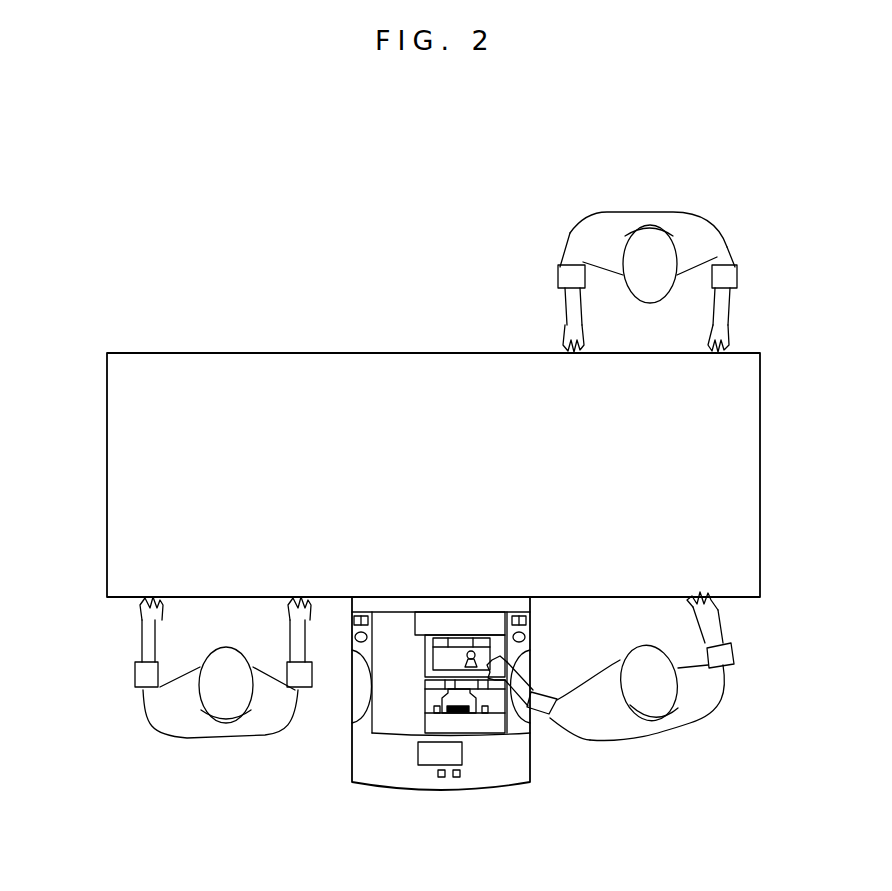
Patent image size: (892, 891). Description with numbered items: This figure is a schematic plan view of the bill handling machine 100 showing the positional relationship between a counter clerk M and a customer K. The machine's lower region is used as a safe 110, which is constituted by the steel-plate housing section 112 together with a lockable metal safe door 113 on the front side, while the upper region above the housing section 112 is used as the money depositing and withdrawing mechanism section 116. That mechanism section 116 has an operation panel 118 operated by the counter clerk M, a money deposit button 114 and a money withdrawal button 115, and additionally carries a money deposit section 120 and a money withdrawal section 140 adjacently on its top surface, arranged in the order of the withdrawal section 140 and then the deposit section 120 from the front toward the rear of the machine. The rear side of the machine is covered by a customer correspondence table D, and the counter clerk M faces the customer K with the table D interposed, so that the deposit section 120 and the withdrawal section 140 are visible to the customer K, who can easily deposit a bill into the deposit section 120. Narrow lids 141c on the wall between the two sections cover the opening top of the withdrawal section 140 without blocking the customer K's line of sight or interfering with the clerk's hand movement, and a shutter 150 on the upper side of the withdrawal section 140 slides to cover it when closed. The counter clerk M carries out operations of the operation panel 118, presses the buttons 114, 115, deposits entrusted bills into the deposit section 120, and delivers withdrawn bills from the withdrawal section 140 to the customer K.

The bill handling machine 100 is at (342, 834).
The safe 110 is at (420, 792).
The safe door 113 is at (441, 741).
The housing section 112 is at (375, 375).
The money deposit button 114 is at (443, 778).
The money withdrawal button 115 is at (460, 778).
The money depositing and withdrawing mechanism section 116 is at (370, 731).
The operation panel 118 is at (462, 758).
The money deposit section 120 is at (458, 636).
The money withdrawal section 140 is at (550, 720).
The lids 141c is at (472, 690).
The shutter 150 is at (423, 718).
The customer correspondence table D is at (200, 375).
The customer K is at (702, 238).
The counter clerk M is at (160, 720).